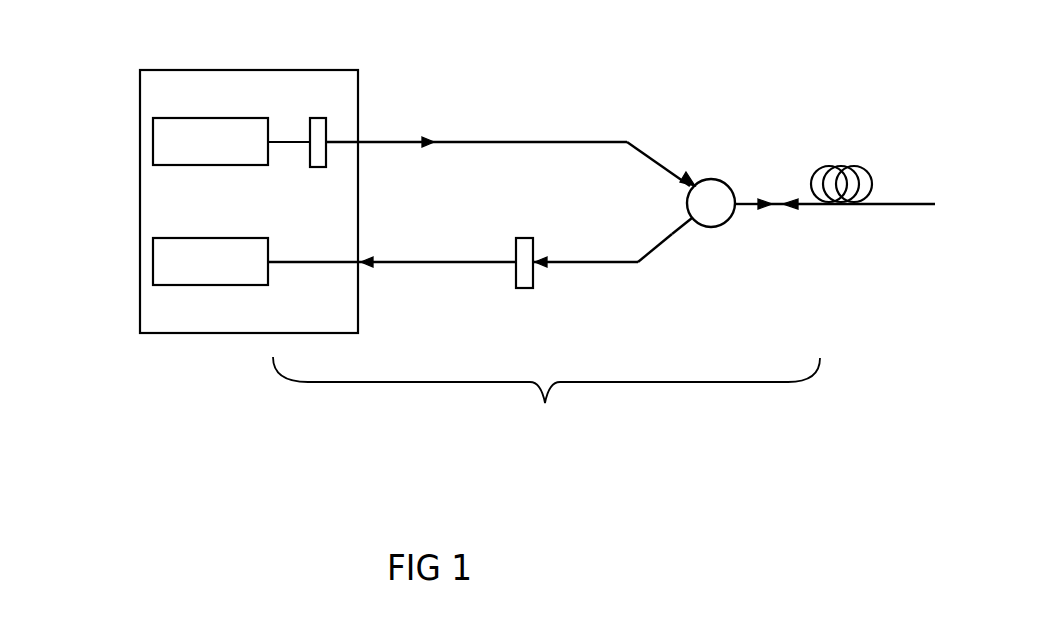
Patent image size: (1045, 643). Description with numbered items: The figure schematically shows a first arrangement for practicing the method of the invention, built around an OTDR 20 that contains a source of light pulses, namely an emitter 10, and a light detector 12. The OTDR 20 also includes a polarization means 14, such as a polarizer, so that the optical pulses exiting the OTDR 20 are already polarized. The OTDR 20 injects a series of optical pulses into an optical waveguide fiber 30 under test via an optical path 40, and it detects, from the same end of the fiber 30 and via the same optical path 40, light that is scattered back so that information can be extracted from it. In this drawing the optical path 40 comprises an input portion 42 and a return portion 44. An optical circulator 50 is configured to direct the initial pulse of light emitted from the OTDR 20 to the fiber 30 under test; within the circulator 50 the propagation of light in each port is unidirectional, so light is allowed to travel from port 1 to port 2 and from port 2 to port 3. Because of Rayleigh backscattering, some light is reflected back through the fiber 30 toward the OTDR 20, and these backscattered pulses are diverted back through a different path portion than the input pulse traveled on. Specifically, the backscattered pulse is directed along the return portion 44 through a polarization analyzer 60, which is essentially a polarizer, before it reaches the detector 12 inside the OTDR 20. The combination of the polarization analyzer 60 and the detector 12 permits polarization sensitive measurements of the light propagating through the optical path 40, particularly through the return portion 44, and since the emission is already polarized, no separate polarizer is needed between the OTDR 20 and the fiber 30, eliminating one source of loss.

The emitter 10 is at (152, 118).
The light detector 12 is at (212, 285).
The polarization means 14 is at (320, 118).
The OTDR 20 is at (140, 333).
The optical waveguide fiber 30 is at (857, 165).
The optical path 40 is at (546, 399).
The input portion 42 is at (553, 142).
The return portion 44 is at (603, 262).
The optical circulator 50 is at (723, 177).
The polarization analyzer 60 is at (513, 287).
The port 1 is at (685, 166).
The port 2 is at (747, 190).
The port 3 is at (685, 236).